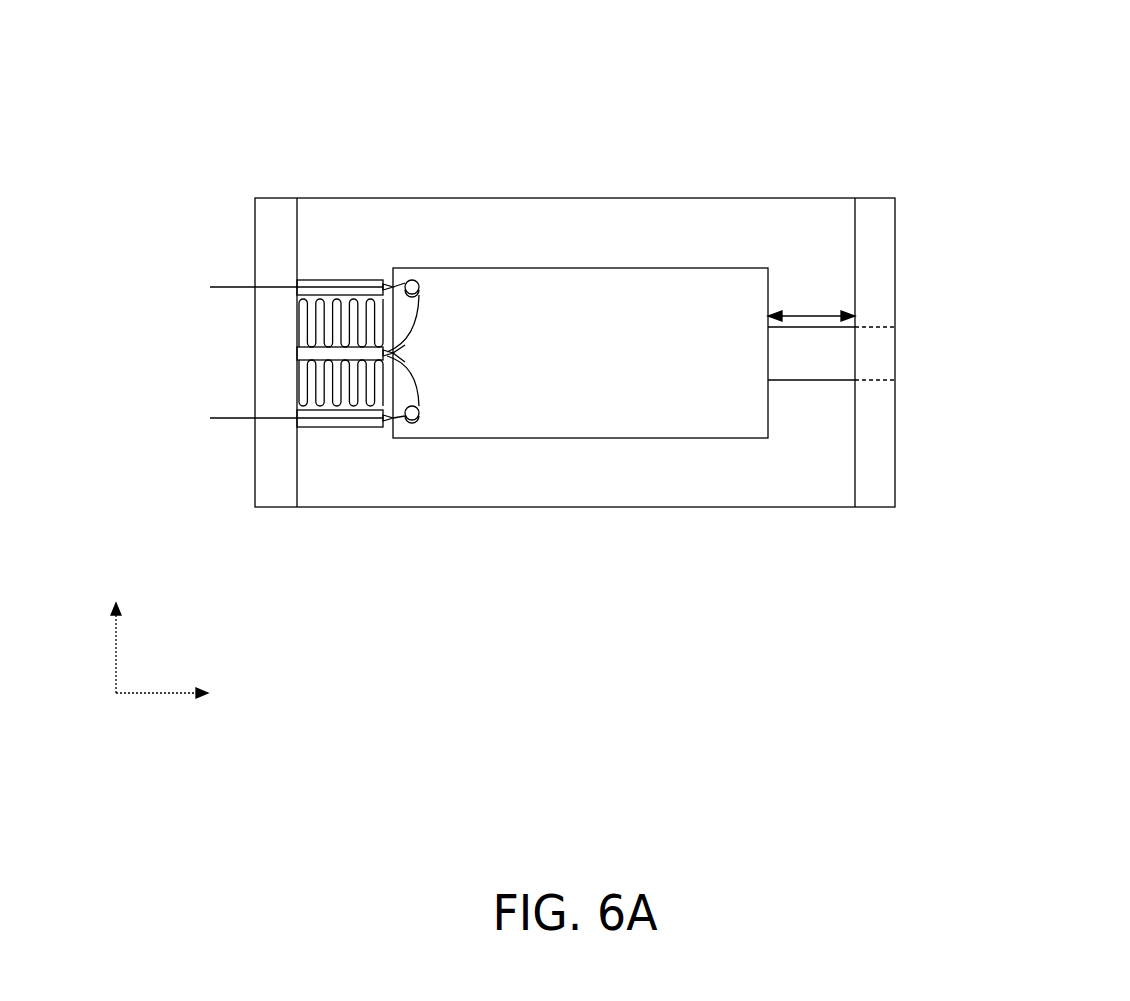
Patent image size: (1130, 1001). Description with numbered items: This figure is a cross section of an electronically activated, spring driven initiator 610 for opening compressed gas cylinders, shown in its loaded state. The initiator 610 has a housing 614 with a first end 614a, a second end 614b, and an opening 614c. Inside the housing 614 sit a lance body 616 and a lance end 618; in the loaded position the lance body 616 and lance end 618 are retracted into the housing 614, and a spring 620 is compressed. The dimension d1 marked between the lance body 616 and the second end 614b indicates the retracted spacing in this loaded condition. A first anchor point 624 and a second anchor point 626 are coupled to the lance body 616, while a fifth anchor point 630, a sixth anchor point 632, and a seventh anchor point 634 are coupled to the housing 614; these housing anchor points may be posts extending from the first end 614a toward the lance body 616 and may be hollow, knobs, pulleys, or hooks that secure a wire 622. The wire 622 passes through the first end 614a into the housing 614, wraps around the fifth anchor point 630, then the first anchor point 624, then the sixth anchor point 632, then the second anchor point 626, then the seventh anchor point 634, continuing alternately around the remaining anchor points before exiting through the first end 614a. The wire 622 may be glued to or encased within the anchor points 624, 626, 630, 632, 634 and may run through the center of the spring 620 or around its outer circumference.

The initiator 610 is at (132, 138).
The housing 614 is at (760, 198).
The first end of housing 614a is at (277, 206).
The second end of housing 614b is at (873, 212).
The opening of housing 614c is at (882, 362).
The lance body 616 is at (626, 432).
The lance end 618 is at (810, 378).
The spring 620 is at (300, 305).
The wire 622 is at (210, 288).
The first anchor point 624 is at (413, 427).
The second anchor point 626 is at (405, 280).
The fifth anchor point 630 is at (330, 428).
The sixth anchor point 632 is at (302, 353).
The seventh anchor point 634 is at (340, 280).
The gap distance d1 is at (808, 310).